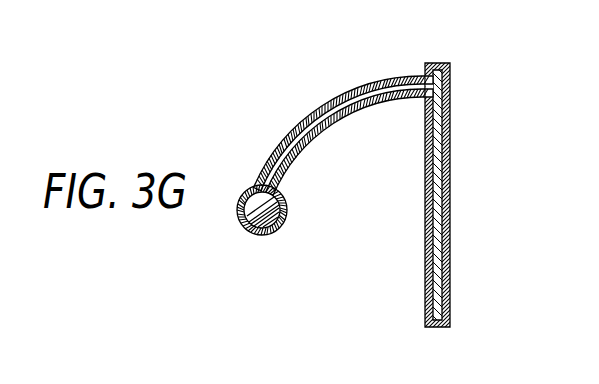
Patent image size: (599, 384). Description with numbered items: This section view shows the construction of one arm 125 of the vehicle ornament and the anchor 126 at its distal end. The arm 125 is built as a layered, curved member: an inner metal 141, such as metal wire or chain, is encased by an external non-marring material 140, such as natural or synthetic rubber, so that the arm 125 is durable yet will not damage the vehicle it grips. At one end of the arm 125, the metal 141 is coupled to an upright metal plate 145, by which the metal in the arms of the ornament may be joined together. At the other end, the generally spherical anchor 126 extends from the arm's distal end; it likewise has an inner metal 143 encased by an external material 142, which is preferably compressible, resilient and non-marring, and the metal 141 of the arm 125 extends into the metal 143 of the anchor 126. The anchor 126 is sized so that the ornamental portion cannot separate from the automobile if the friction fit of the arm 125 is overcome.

The arm 125 is at (334, 105).
The non-marring material 140 is at (280, 142).
The metal 141 is at (305, 138).
The metal plate 145 is at (437, 165).
The anchor 126 is at (283, 234).
The external material 142 is at (240, 217).
The metal 143 is at (277, 234).